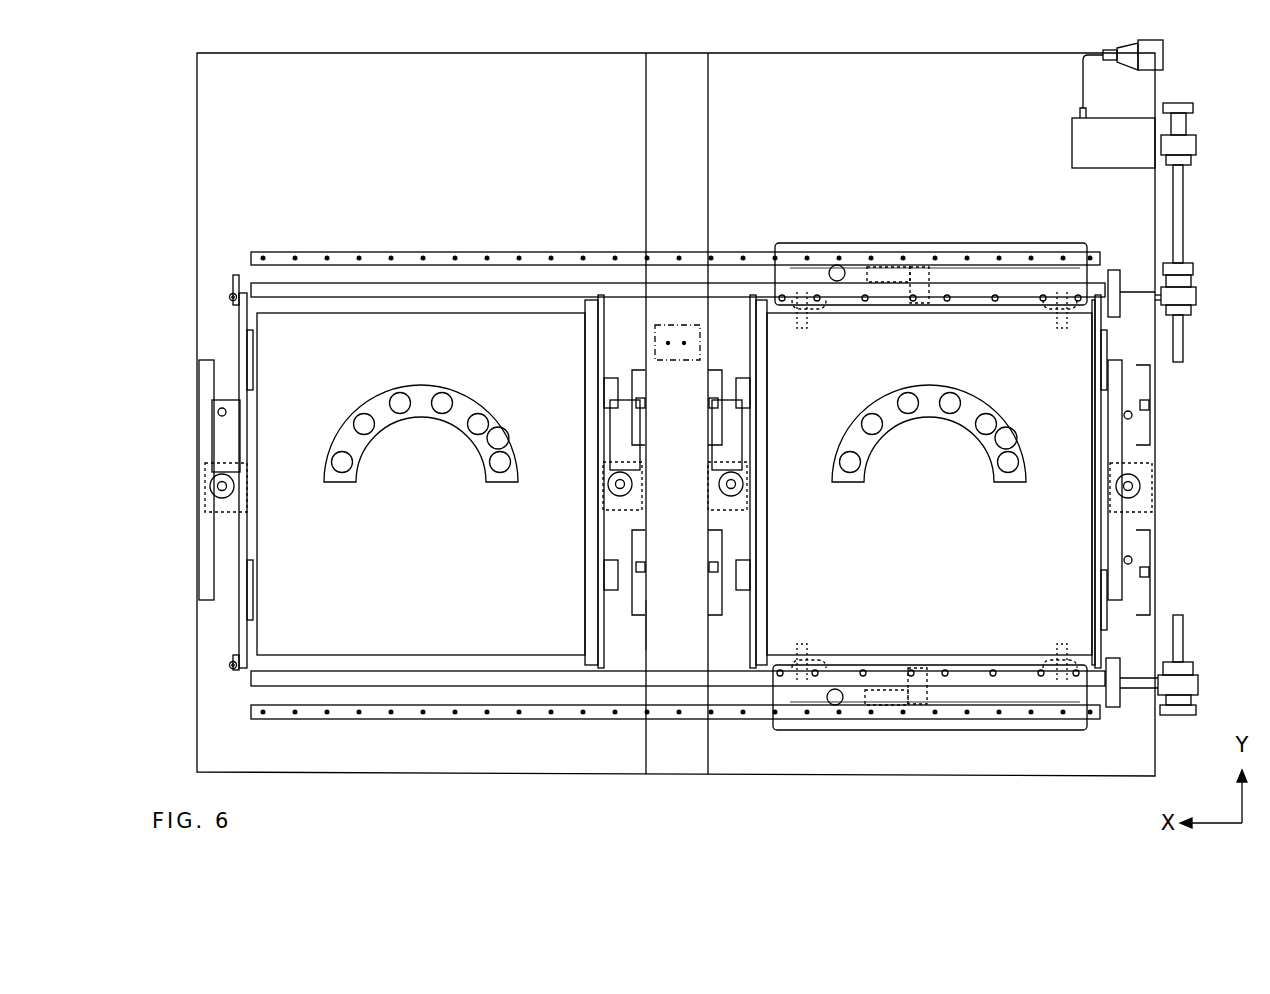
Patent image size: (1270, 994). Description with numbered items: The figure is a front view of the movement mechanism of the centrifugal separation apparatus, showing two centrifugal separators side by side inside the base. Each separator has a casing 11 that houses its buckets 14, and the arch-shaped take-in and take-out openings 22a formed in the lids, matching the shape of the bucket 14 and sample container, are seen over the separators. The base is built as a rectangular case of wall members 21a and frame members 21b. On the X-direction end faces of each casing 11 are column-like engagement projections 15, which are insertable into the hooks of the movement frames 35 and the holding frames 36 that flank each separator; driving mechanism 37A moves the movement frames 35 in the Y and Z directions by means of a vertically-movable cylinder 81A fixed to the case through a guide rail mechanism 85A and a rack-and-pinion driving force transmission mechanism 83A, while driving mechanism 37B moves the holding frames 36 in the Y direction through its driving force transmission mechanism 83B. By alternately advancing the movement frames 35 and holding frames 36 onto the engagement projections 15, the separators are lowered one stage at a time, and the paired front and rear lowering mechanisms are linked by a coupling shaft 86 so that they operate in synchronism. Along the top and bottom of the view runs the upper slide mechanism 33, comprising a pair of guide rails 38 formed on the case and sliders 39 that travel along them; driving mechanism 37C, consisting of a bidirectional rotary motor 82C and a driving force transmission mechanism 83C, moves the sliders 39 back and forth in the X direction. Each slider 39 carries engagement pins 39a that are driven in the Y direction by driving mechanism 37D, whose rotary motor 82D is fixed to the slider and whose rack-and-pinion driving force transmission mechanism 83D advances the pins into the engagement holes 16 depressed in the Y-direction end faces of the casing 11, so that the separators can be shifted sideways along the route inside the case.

The casing 11 is at (528, 330).
The bucket 14 is at (482, 430).
The engagement projection 15 is at (247, 620).
The engagement hole 16 is at (798, 300).
The wall member 21a is at (197, 698).
The frame member 21b is at (654, 630).
The take-in opening 22a is at (499, 428).
The upper slide mechanism 33 is at (985, 243).
The movement frame 35 is at (253, 388).
The holding frame 36 is at (240, 330).
The driving mechanism 37A is at (205, 486).
The driving mechanism 37B is at (233, 293).
The driving mechanism 37C is at (1198, 686).
The driving mechanism 37D is at (905, 267).
The guide rail 38 is at (726, 252).
The slider 39 is at (853, 275).
The engagement pin 39a is at (820, 300).
The vertically-movable cylinder 81A is at (234, 486).
The rotary motor 82C is at (1122, 158).
The rotary motor 82D is at (884, 267).
The driving force transmission mechanism 83A is at (232, 415).
The driving force transmission mechanism 83B is at (236, 300).
The driving force transmission mechanism 83C is at (1105, 278).
The driving force transmission mechanism 83D is at (922, 267).
The guide rail mechanism 85A is at (645, 398).
The coupling shaft 86 is at (1181, 620).